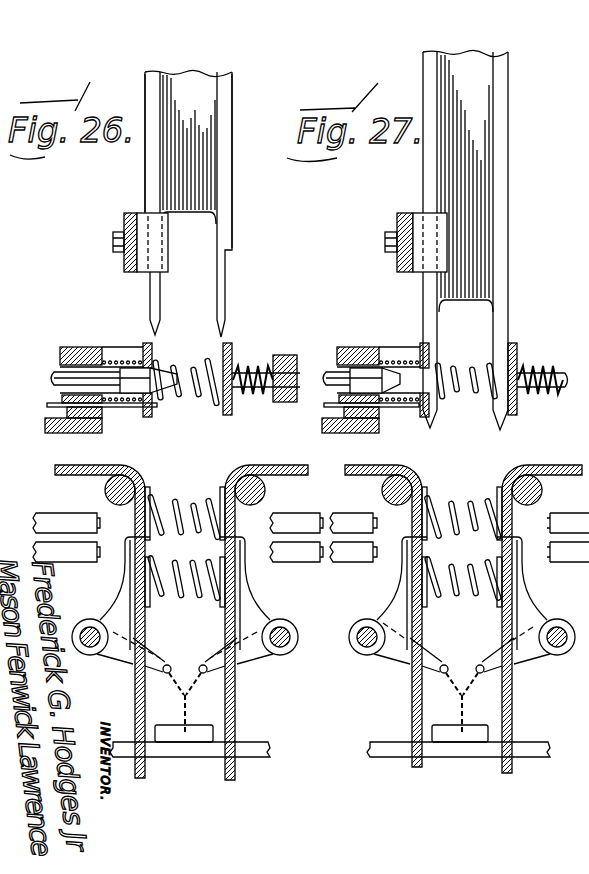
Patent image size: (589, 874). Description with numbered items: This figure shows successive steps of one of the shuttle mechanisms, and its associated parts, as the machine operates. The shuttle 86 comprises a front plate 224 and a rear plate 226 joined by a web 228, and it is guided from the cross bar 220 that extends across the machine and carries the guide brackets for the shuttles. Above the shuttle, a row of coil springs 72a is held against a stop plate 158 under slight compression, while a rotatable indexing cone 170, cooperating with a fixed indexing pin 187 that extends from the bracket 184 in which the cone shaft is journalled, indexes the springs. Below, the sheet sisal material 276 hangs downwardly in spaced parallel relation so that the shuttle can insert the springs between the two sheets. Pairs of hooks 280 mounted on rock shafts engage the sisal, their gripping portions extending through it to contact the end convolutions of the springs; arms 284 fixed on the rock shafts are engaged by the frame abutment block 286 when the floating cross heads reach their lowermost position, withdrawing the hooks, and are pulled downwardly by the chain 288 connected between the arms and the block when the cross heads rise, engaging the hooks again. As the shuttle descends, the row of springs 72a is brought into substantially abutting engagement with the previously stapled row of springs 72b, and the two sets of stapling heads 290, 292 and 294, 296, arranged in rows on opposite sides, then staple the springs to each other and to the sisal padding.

In FIG. 26, the central shuttle 86 is at (202, 92).
In FIG. 27, the central shuttle 86 is at (473, 248).
In FIG. 26, the web 228 is at (205, 180).
In FIG. 26, the rear plate 226 is at (155, 181).
In FIG. 26, the front plate 224 is at (226, 216).
In FIG. 26, the cross bar 220 is at (124, 222).
In FIG. 27, the cross bar 220 is at (416, 242).
In FIG. 26, the stop plate 158 is at (143, 347).
In FIG. 27, the stop plate 158 is at (419, 345).
In FIG. 26, the fixed indexing pin 187 is at (152, 405).
In FIG. 26, the rotatable indexing cone 170 is at (137, 385).
In FIG. 27, the rotatable indexing cone 170 is at (397, 395).
In FIG. 26, the row of springs 72a is at (178, 370).
In FIG. 27, the row of springs 72a is at (452, 368).
In FIG. 26, the bracket 184 is at (233, 352).
In FIG. 27, the bracket 184 is at (518, 350).
In FIG. 26, the sheet sisal material 276 is at (62, 468).
In FIG. 26, the row of springs 72b is at (181, 505).
In FIG. 27, the row of springs 72b is at (453, 505).
In FIG. 26, the stapling head 296 is at (62, 522).
In FIG. 26, the stapling head 294 is at (75, 550).
In FIG. 26, the stapling head 292 is at (298, 522).
In FIG. 26, the stapling head 290 is at (292, 556).
In FIG. 26, the hooks 280 is at (250, 615).
In FIG. 27, the hooks 280 is at (397, 612).
In FIG. 26, the chain 288 is at (187, 708).
In FIG. 26, the frame abutment block 286 is at (205, 745).
In FIG. 27, the arms 284 is at (403, 657).